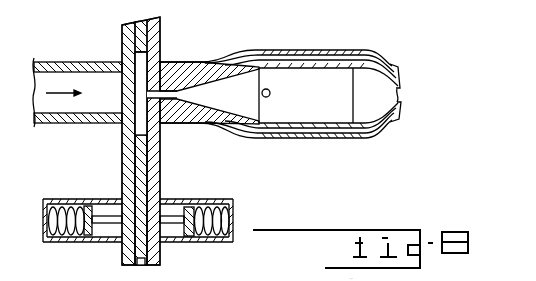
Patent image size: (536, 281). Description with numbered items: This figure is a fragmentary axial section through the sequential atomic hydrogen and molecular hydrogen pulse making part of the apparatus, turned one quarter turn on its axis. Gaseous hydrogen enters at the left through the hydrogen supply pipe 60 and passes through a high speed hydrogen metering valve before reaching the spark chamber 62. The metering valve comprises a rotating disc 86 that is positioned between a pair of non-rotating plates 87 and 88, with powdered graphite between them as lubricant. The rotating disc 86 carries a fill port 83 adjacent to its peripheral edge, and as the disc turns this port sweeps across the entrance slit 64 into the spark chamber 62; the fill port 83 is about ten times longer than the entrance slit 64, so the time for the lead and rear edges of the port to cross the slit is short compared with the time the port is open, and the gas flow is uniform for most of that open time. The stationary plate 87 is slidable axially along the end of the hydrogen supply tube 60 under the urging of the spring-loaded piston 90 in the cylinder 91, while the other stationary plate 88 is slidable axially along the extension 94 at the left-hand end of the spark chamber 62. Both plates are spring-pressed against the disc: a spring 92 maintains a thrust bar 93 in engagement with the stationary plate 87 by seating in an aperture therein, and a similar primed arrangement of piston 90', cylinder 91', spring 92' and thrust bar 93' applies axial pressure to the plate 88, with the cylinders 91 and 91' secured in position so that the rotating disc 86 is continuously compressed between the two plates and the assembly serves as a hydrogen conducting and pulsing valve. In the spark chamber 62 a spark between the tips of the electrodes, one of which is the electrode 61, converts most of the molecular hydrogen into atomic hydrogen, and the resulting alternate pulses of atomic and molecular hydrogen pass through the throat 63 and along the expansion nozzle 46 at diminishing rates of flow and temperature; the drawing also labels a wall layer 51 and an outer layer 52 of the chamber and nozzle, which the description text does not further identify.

The expansion nozzle 46 is at (400, 80).
The inner shell wall 51 is at (316, 69).
The outer shell wall 52 is at (386, 71).
The hydrogen supply pipe 60 is at (52, 126).
The electrode 61 is at (268, 89).
The spark chamber 62 is at (310, 115).
The throat 63 is at (406, 95).
The entrance slit 64 is at (142, 92).
The fill port 83 is at (140, 114).
The rotating disc 86 is at (162, 150).
The stationary plate 87 is at (122, 144).
The stationary plate 88 is at (153, 172).
The spring-loaded piston 90 is at (94, 205).
The spring-loaded piston 90' is at (205, 203).
The cylinder 91 is at (67, 205).
The cylinder 91' is at (227, 204).
The spring 92 is at (82, 234).
The spring 92' is at (200, 234).
The thrust bar 93 is at (102, 243).
The thrust bar 93' is at (177, 243).
The extension 94 is at (168, 126).